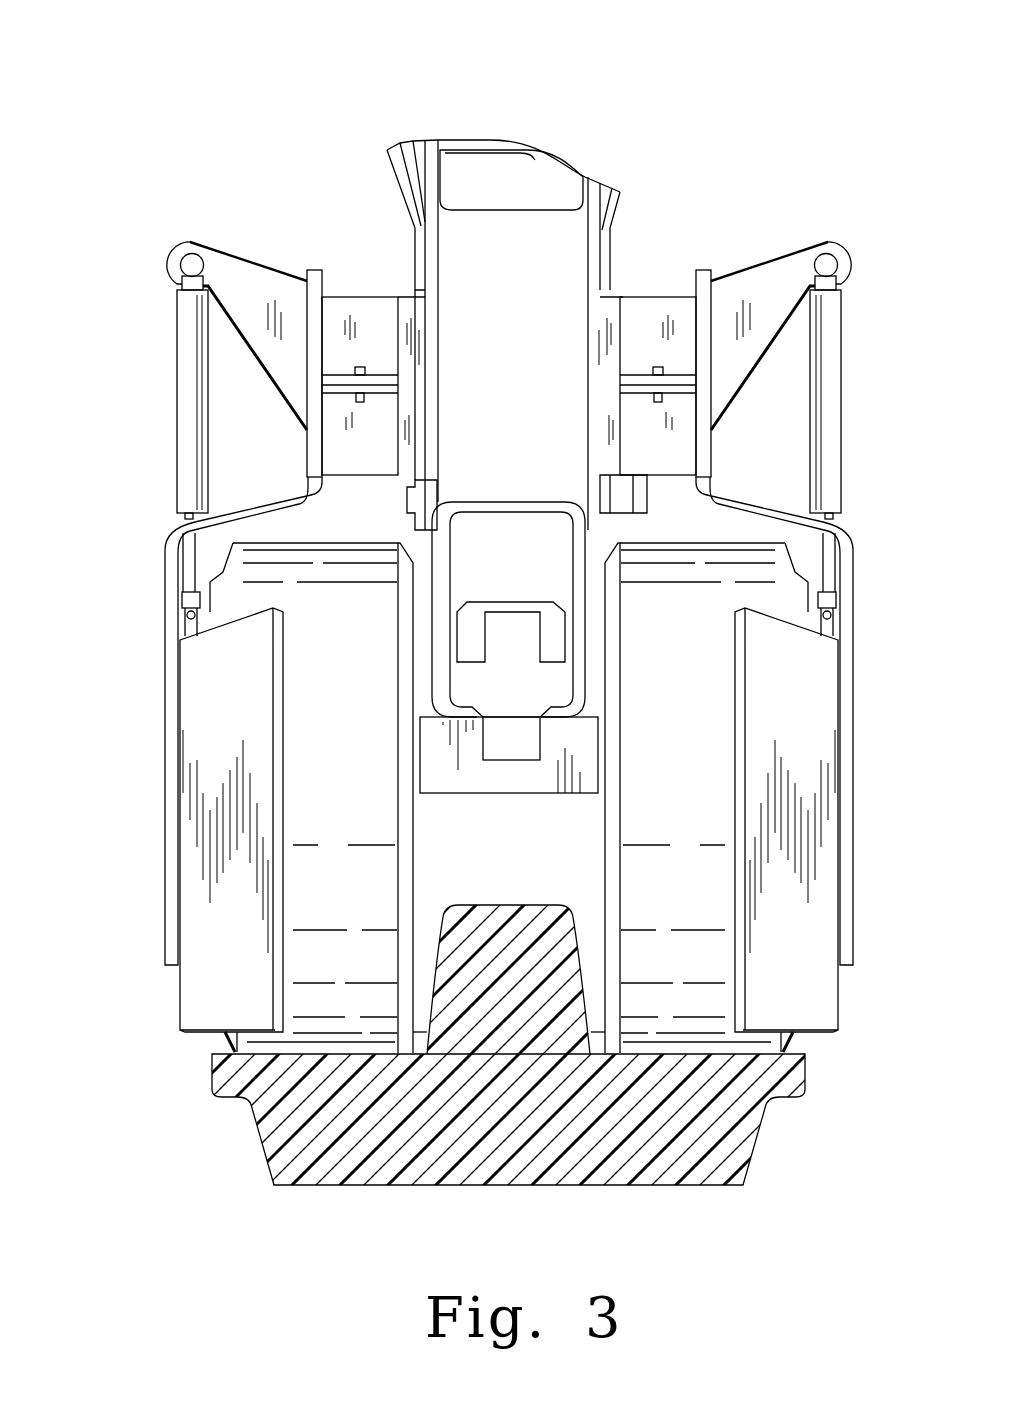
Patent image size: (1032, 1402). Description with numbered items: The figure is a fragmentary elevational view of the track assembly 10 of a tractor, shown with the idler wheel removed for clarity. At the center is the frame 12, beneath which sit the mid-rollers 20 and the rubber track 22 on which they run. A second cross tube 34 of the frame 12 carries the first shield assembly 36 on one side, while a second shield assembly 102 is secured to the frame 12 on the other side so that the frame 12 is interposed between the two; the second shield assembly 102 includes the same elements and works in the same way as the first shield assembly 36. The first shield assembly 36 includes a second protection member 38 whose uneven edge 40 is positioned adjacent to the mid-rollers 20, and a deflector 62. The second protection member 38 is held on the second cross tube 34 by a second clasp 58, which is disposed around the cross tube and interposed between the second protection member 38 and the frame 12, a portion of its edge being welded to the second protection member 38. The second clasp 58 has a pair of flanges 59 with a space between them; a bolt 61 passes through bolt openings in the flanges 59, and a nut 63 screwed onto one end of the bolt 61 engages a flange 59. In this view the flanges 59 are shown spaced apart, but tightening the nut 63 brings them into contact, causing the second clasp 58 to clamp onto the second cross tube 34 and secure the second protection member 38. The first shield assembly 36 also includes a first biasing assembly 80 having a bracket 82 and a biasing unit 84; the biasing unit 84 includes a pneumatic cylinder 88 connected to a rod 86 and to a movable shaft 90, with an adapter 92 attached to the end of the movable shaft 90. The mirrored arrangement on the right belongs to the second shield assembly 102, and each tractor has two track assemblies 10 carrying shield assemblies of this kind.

The track assembly 10 is at (818, 82).
The frame 12 is at (645, 214).
The mid-rollers 20 is at (343, 902).
The rubber track 22 is at (736, 1222).
The second cross tube 34 is at (410, 395).
The first shield assembly 36 is at (132, 506).
The second protection member 38 is at (170, 588).
The uneven edge 40 is at (167, 968).
The second clasp 58 is at (362, 328).
The flanges 59 is at (382, 362).
The bolt 61 is at (346, 372).
The deflector 62 is at (215, 997).
The nut 63 is at (361, 403).
The first biasing assembly 80 is at (166, 198).
The bracket 82 is at (238, 272).
The biasing unit 84 is at (150, 380).
The rod 86 is at (182, 286).
The pneumatic cylinder 88 is at (186, 448).
The movable shaft 90 is at (192, 558).
The adapter 92 is at (180, 600).
The second shield assembly 102 is at (878, 206).